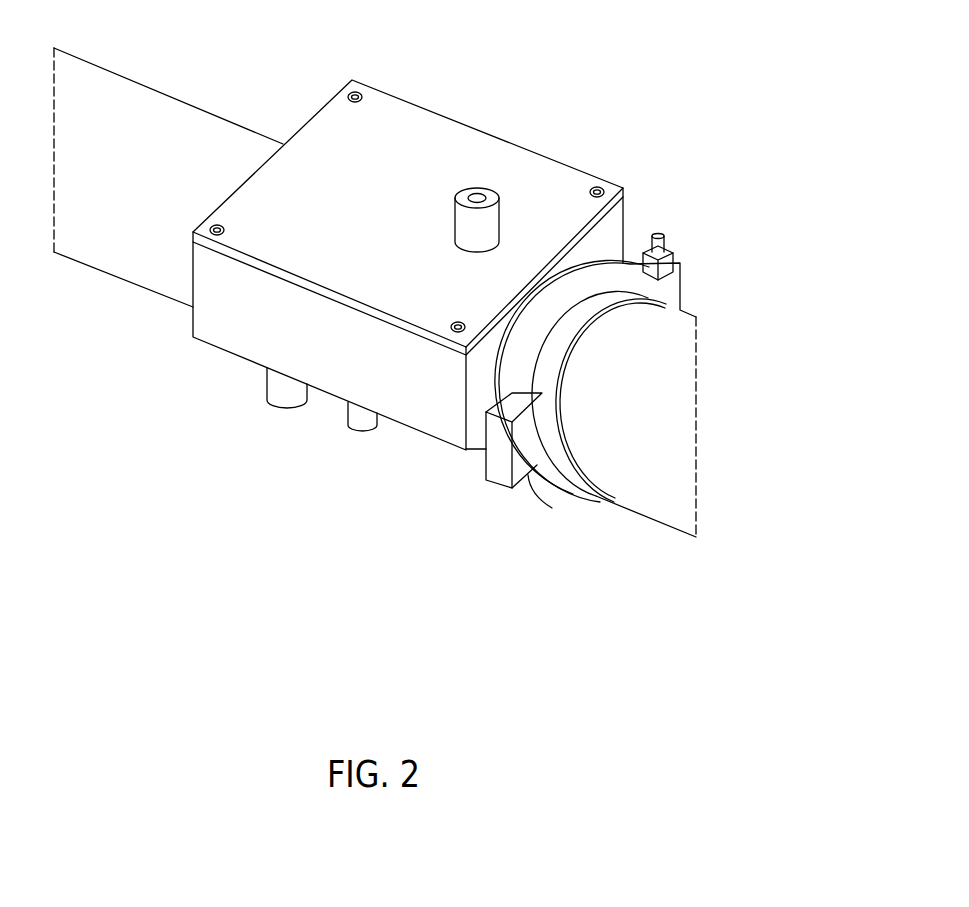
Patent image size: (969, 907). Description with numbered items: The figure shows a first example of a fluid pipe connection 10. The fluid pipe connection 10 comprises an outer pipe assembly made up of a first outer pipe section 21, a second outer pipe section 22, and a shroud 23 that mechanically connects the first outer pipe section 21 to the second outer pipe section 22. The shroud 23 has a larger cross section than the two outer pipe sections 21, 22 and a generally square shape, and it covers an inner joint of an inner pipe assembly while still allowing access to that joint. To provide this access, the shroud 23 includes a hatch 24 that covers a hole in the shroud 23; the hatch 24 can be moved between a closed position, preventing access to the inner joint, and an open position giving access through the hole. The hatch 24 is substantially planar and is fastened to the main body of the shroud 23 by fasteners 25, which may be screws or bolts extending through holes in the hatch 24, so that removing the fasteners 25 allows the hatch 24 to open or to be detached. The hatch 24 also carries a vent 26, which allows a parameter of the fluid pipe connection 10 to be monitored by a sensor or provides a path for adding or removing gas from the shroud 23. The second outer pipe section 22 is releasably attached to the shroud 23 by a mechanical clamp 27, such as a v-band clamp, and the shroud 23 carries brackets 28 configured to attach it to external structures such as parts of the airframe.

The fluid pipe connection 10 is at (713, 667).
The first outer pipe section 21 is at (172, 123).
The second outer pipe section 22 is at (653, 480).
The shroud 23 is at (265, 323).
The hatch 24 is at (417, 150).
The fasteners 25 is at (358, 90).
The vent 26 is at (478, 193).
The mechanical clamp 27 is at (503, 447).
The brackets 28 is at (280, 398).